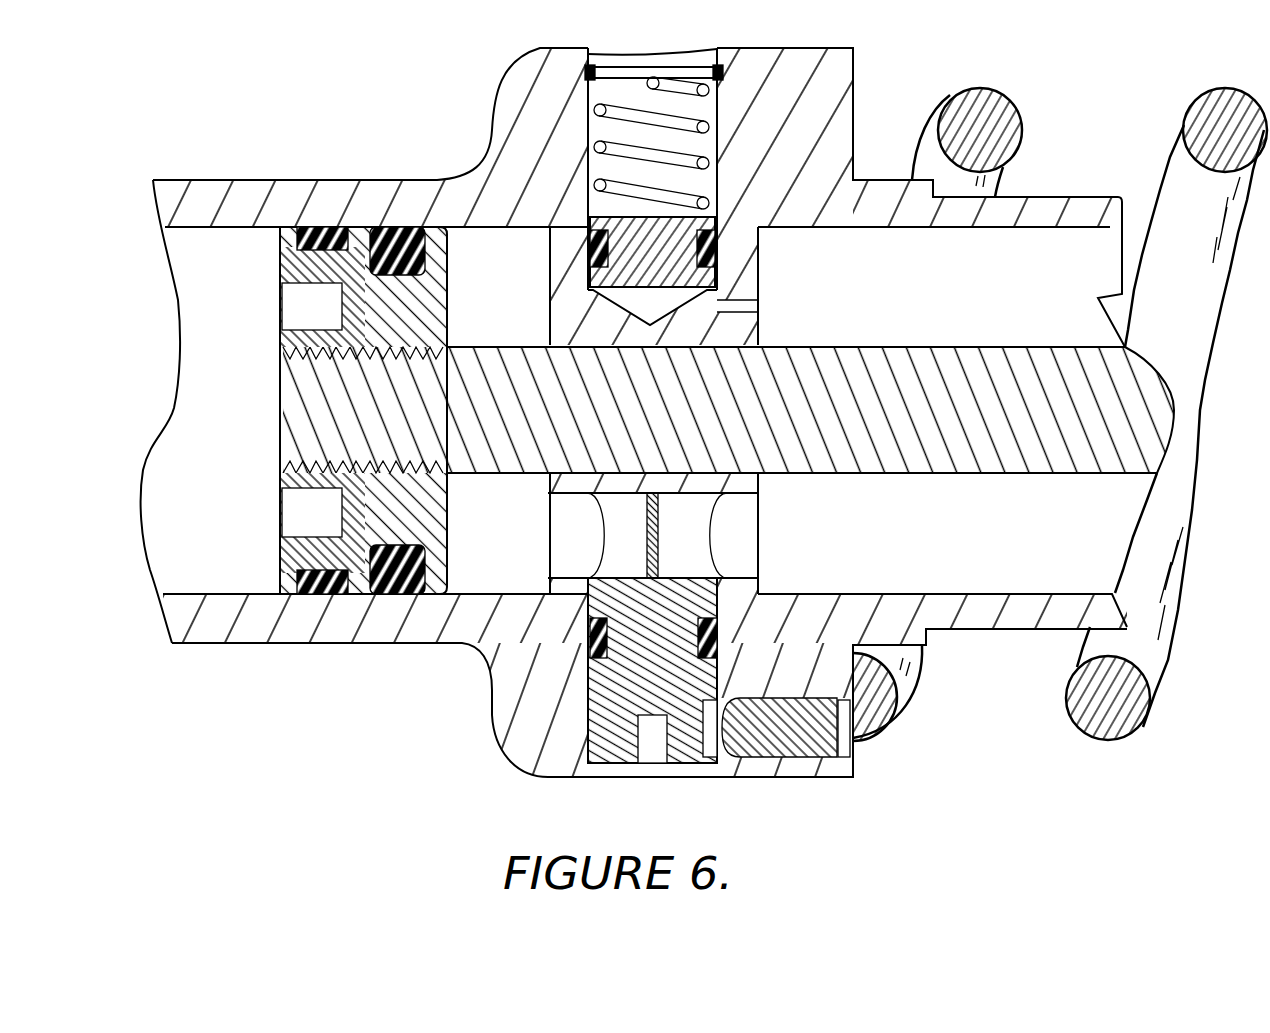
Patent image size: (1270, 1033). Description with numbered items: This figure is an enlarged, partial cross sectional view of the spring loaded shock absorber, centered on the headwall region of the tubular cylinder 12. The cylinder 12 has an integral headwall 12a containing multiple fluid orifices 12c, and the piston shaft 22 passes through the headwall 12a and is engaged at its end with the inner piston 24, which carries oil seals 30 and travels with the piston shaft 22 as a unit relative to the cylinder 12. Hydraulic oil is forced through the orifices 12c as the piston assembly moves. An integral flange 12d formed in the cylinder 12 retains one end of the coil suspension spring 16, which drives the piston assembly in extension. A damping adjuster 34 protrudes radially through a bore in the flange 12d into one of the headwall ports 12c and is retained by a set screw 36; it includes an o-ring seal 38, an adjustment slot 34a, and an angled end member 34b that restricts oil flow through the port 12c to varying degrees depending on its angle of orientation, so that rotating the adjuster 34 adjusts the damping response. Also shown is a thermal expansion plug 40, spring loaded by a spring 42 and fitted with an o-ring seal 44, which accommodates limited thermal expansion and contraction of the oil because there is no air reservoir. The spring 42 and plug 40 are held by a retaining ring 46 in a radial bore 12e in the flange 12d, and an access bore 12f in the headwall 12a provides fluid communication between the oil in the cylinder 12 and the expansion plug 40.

The tubular cylinder 12 is at (322, 166).
The integral headwall 12a is at (740, 332).
The fluid orifices 12c is at (742, 553).
The integral flange 12d is at (853, 113).
The radial bore 12e is at (603, 128).
The access bore 12f is at (743, 305).
The coil suspension spring 16 is at (1006, 97).
The piston shaft 22 is at (1080, 473).
The inner piston 24 is at (283, 345).
The oil seals 30 is at (375, 594).
The damping adjuster 34 is at (690, 755).
The adjustment slot 34a is at (650, 755).
The angled end member 34b is at (655, 514).
The set screw 36 is at (822, 745).
The o-ring seal 38 is at (587, 633).
The thermal expansion plug 40 is at (593, 288).
The spring 42 is at (622, 112).
The o-ring seal 44 is at (713, 257).
The retaining ring 46 is at (708, 77).